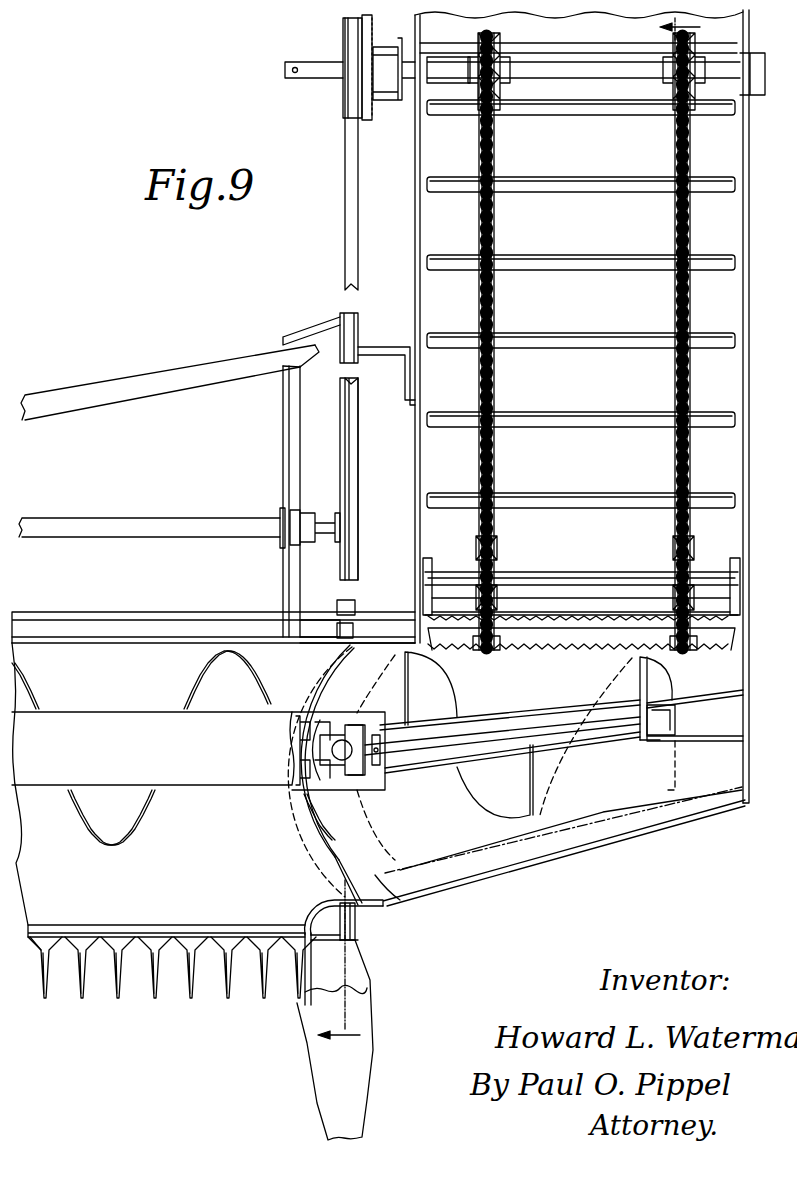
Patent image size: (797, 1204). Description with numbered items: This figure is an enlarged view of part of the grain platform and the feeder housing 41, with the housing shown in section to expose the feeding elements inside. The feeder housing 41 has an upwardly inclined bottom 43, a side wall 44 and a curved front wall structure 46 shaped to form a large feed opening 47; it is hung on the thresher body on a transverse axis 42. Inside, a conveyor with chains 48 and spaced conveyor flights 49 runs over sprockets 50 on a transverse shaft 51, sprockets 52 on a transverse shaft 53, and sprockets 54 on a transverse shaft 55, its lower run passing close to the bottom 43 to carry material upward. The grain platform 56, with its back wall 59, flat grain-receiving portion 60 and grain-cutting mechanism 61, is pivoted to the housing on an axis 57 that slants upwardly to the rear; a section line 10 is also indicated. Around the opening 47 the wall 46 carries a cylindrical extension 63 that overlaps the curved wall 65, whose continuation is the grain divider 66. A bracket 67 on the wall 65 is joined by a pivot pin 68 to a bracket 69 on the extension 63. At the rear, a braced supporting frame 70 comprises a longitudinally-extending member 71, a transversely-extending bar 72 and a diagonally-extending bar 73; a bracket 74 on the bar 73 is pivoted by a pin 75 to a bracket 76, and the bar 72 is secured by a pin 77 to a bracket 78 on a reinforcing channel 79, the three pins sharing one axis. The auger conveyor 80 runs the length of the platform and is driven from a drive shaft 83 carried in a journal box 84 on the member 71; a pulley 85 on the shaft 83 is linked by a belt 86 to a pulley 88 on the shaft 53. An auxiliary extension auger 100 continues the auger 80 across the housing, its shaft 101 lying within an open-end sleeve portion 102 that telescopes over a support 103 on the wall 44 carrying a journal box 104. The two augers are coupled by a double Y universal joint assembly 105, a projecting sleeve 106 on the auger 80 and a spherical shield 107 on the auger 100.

The section line 10 is at (521, 537).
The feeder housing 41 is at (530, 878).
The transverse axis 42 is at (285, 68).
The bottom 43 is at (745, 312).
The side wall 44 is at (750, 378).
The curved front wall structure 46 is at (557, 858).
The feed opening 47 is at (400, 905).
The chains 48 is at (495, 297).
The conveyor flights 49 is at (588, 118).
The sprockets 50 is at (486, 642).
The transverse shaft 51 is at (565, 606).
The sprockets 52 is at (485, 36).
The transverse shaft 53 is at (560, 100).
The sprockets 54 is at (497, 553).
The transverse shaft 55 is at (568, 568).
The grain platform 56 is at (96, 637).
The axis 57 is at (368, 988).
The back wall 59 is at (173, 637).
The flat grain-receiving portion 60 is at (150, 908).
The grain-cutting mechanism 61 is at (161, 985).
The cylindrical extension 63 is at (395, 906).
The curved wall 65 is at (303, 1010).
The grain divider 66 is at (323, 1085).
The bracket 67 is at (326, 936).
The pivot pin 68 is at (360, 940).
The bracket 69 is at (358, 910).
The braced supporting frame 70 is at (130, 374).
The longitudinally-extending member 71 is at (284, 446).
The transversely-extending bar 72 is at (232, 620).
The diagonally-extending bar 73 is at (247, 353).
The bracket 74 is at (326, 320).
The pin 75 is at (352, 316).
The bracket 76 is at (384, 350).
The pin 77 is at (352, 604).
The bracket 78 is at (358, 627).
The reinforcing channel 79 is at (362, 641).
The auger conveyor 80 is at (144, 706).
The drive shaft 83 is at (126, 527).
The journal box 84 is at (306, 520).
The pulley 85 is at (358, 512).
The belt 86 is at (345, 198).
The pulley 88 is at (343, 100).
The auxiliary extension auger 100 is at (455, 770).
The shaft 101 is at (652, 742).
The open-end sleeve portion 102 is at (665, 697).
The support 103 is at (695, 738).
The journal box 104 is at (677, 720).
The double Y universal joint assembly 105 is at (352, 790).
The projecting sleeve 106 is at (345, 735).
The spherical shield 107 is at (365, 782).